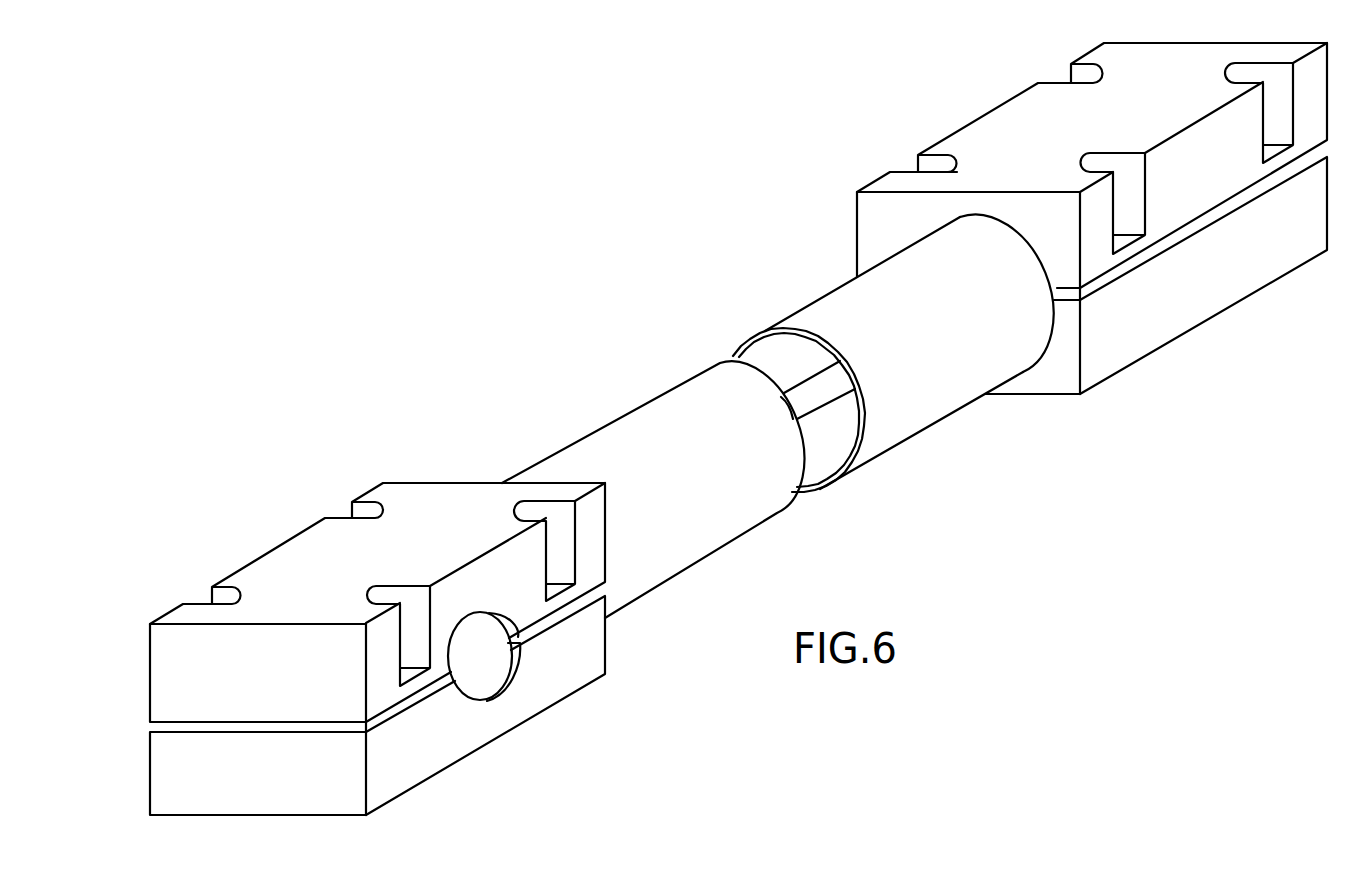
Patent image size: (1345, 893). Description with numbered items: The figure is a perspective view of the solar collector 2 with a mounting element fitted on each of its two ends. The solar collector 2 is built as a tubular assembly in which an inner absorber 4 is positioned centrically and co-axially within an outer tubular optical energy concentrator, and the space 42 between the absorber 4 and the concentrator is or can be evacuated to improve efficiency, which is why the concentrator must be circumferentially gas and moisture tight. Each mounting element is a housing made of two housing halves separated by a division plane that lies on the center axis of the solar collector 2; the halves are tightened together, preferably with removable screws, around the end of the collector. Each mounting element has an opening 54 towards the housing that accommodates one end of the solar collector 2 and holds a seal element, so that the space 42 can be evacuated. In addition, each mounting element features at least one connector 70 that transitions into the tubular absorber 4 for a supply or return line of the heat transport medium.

The solar collector 2 is at (657, 377).
The absorber 4 is at (800, 386).
The space 42 is at (824, 465).
The opening 54 is at (1052, 333).
The connector 70 is at (487, 680).